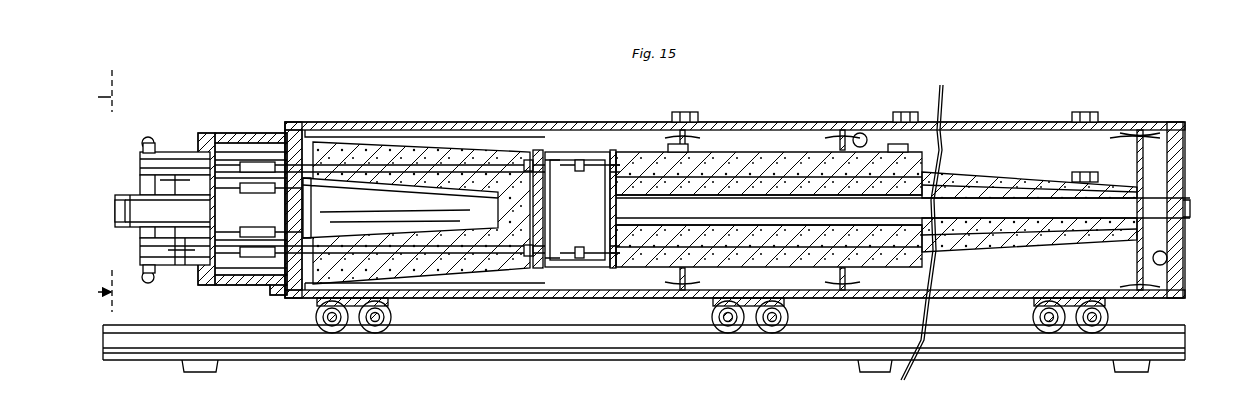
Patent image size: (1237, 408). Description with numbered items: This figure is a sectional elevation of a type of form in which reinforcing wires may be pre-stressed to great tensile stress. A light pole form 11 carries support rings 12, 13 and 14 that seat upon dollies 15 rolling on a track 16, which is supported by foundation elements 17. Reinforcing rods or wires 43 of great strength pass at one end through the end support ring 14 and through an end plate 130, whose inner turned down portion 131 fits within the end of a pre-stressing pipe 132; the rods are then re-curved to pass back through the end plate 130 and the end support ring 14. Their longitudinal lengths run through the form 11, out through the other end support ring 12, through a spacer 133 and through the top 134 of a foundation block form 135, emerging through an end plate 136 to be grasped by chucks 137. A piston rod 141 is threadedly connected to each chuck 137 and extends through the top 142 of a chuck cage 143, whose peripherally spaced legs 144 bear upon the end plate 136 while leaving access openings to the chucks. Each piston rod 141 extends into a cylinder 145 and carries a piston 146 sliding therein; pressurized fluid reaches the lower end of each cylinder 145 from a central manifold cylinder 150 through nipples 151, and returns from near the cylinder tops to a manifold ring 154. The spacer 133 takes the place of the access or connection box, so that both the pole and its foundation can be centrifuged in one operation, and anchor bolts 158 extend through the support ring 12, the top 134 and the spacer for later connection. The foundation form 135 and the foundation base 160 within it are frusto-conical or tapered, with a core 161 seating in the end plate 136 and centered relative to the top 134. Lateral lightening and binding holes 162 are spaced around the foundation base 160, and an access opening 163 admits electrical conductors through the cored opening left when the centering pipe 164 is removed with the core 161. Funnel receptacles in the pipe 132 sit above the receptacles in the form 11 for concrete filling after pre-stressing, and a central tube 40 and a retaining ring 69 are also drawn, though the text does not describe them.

The form 11 is at (753, 143).
The support ring 12 is at (612, 205).
The support ring 13 is at (712, 315).
The end support ring 14 is at (1130, 172).
The dollies 15 is at (304, 296).
The track 16 is at (222, 322).
The foundation elements 17 is at (508, 357).
The central core tube 40 is at (680, 212).
The reinforcing rods or wires 43 is at (783, 176).
The retaining ring 69 is at (862, 134).
The end plate 130 is at (1185, 176).
The inner turned down portion 131 is at (1167, 258).
The pipe 132 is at (1126, 122).
The spacer 133 is at (570, 126).
The top of foundation block form 134 is at (545, 182).
The foundation block form 135 is at (488, 142).
The end plate 136 is at (400, 208).
The chucks 137 is at (258, 230).
The piston rod 141 is at (190, 266).
The top of chuck cage 142 is at (204, 132).
The chuck cage 143 is at (232, 132).
The legs 144 is at (290, 130).
The cylinder 145 is at (170, 150).
The piston 146 is at (160, 283).
The manifold cylinder 150 is at (115, 210).
The nipples 151 is at (105, 178).
The manifold ring 154 is at (142, 232).
The anchor bolts 158 is at (552, 258).
The foundation base 160 is at (500, 268).
The core 161 is at (408, 203).
The lateral lightening and binding holes 162 is at (442, 285).
The access opening 163 is at (448, 116).
The centering pipe 164 is at (690, 145).